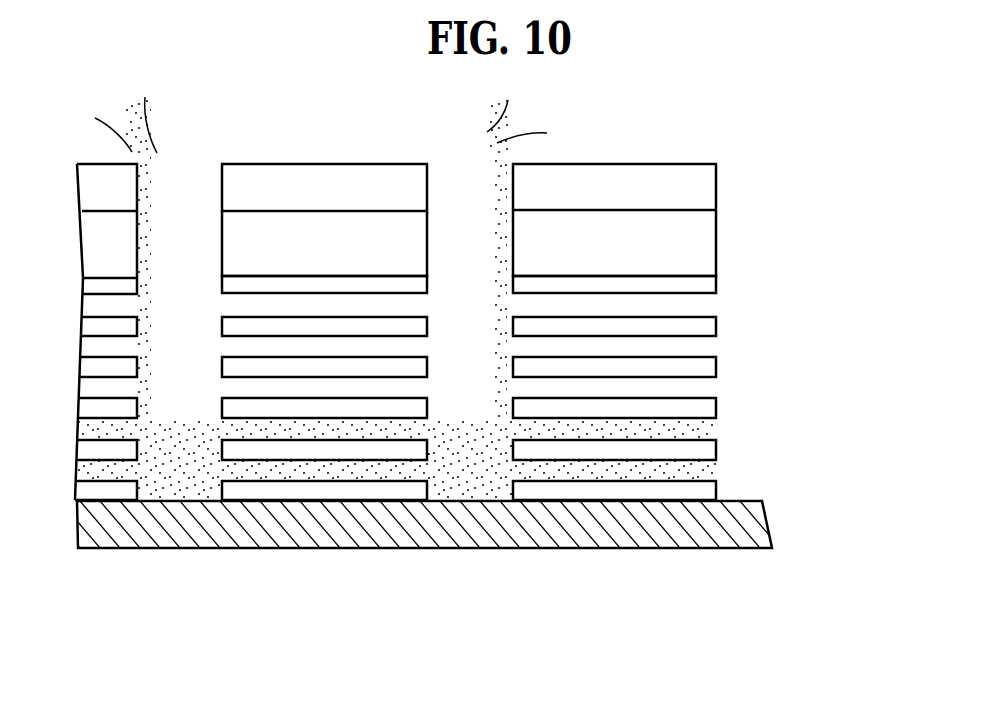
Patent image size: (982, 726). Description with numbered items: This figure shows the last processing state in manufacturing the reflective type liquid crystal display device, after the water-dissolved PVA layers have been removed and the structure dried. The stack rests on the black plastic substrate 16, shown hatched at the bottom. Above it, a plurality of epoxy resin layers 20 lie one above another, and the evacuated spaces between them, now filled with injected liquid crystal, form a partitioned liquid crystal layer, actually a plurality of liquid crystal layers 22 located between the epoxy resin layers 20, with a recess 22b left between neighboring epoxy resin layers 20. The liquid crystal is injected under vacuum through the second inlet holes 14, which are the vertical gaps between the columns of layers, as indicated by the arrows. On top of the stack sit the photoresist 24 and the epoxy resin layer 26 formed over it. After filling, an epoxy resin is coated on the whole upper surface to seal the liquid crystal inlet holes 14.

The second inlet holes 14 is at (192, 200).
The black plastic substrate 16 is at (716, 540).
The epoxy resin layers 20 is at (703, 364).
The liquid crystal layers 22 is at (717, 458).
The recess between conductive layers 22b is at (707, 343).
The photoresist 24 is at (352, 235).
The epoxy resin layer 26 is at (298, 178).